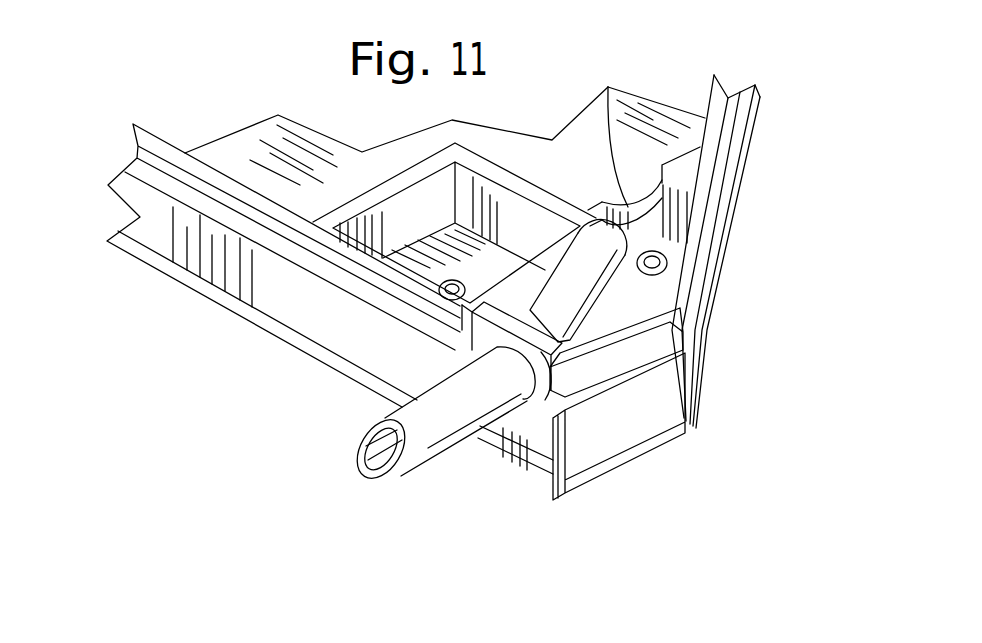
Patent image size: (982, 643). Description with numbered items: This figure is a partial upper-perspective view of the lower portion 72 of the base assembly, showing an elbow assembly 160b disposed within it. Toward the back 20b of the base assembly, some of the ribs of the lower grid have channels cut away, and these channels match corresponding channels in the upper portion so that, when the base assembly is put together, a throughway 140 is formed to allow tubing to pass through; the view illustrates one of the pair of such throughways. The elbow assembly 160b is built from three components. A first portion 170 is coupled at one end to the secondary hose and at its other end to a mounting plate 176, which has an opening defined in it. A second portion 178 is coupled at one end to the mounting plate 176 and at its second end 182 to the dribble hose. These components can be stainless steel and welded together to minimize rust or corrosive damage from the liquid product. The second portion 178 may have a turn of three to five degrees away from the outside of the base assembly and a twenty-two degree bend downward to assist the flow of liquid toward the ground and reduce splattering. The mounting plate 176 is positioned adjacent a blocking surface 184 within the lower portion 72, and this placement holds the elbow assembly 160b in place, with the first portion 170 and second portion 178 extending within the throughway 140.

The back of the base assembly 20b is at (205, 302).
The lower portion of the base assembly 72 is at (750, 183).
The throughway 140 is at (628, 209).
The elbow assembly 160b is at (355, 427).
The first portion of the elbow assembly 170 is at (600, 310).
The mounting plate 176 is at (567, 412).
The second portion of the elbow assembly 178 is at (432, 447).
The second end of the second portion 182 is at (364, 469).
The blocking surface 184 is at (478, 337).